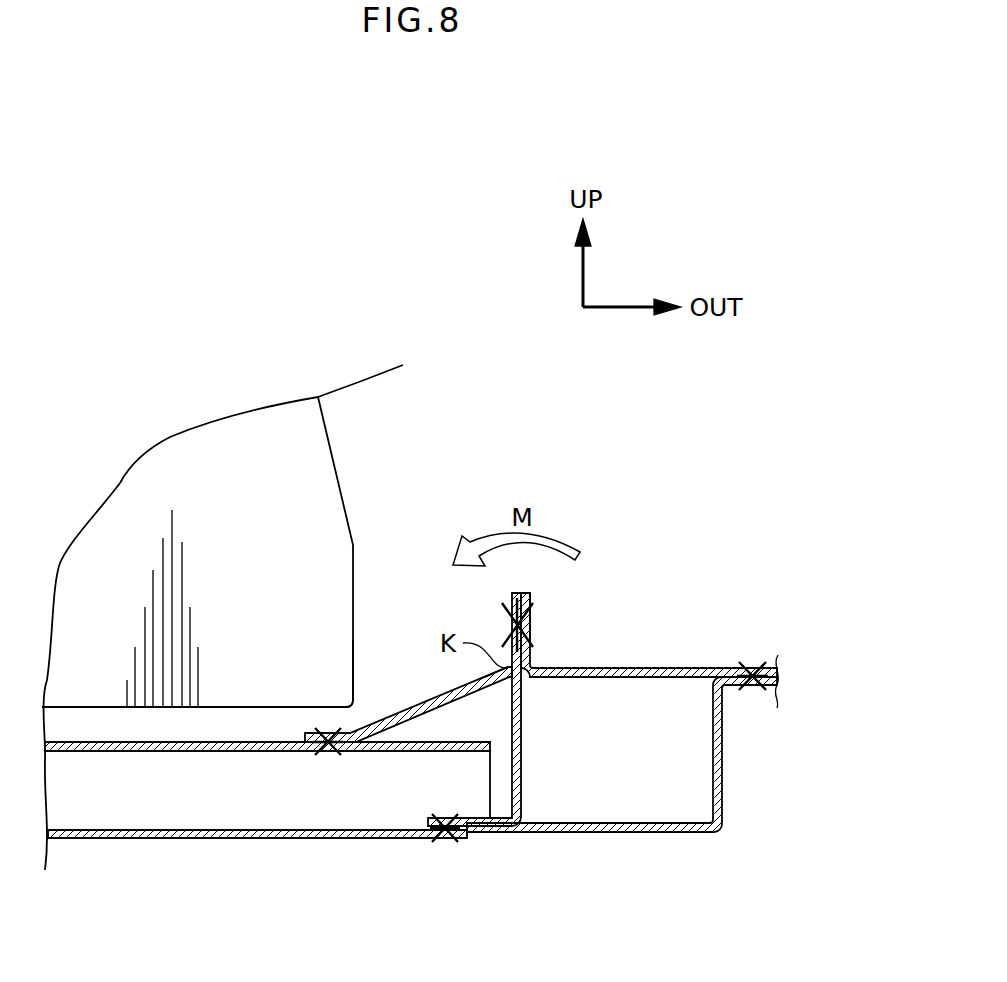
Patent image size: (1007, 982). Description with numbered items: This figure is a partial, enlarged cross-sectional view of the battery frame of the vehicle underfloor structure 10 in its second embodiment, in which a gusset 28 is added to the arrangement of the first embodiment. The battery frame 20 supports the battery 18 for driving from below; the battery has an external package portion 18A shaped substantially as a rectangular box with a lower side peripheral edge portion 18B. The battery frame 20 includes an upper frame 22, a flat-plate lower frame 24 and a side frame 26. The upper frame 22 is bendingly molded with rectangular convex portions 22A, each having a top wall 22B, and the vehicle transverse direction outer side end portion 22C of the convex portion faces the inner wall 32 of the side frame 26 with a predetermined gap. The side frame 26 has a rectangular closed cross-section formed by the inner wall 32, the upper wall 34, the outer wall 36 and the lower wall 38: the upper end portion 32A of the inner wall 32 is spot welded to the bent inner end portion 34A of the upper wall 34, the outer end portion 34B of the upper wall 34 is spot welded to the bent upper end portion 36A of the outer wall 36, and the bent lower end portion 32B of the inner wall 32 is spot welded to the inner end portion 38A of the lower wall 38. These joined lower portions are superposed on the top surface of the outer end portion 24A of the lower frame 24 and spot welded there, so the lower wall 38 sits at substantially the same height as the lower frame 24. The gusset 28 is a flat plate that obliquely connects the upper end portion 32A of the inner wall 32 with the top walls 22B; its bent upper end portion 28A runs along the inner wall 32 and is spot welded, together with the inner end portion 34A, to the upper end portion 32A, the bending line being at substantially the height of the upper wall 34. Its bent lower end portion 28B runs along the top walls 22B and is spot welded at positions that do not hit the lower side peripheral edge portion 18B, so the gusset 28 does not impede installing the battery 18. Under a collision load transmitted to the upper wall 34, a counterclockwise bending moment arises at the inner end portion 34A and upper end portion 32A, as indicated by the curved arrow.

The vehicle underfloor structure 10 is at (175, 372).
The battery for driving 18 is at (340, 462).
The external package portion 18A is at (287, 428).
The lower side peripheral edge portion 18B is at (364, 706).
The battery frame 20 is at (276, 880).
The upper frame 22 is at (112, 740).
The convex portion 22A is at (276, 740).
The top wall 22B is at (233, 740).
The vehicle transverse direction outer side end portion 22C is at (523, 748).
The lower frame 24 is at (158, 843).
The outer end portion 24A is at (440, 843).
The side frame 26 is at (631, 837).
The gusset 28 is at (407, 706).
The upper end portion 28A is at (507, 624).
The lower end portion 28B is at (328, 730).
The inner wall 32 is at (523, 786).
The upper end portion 32A is at (527, 594).
The lower end portion 32B is at (455, 812).
The upper wall 34 is at (672, 668).
The inner end portion 34A is at (529, 597).
The outer end portion 34B is at (752, 670).
The outer wall 36 is at (723, 785).
The upper end portion 36A is at (770, 690).
The lower wall 38 is at (560, 834).
The inner end portion 38A is at (490, 834).